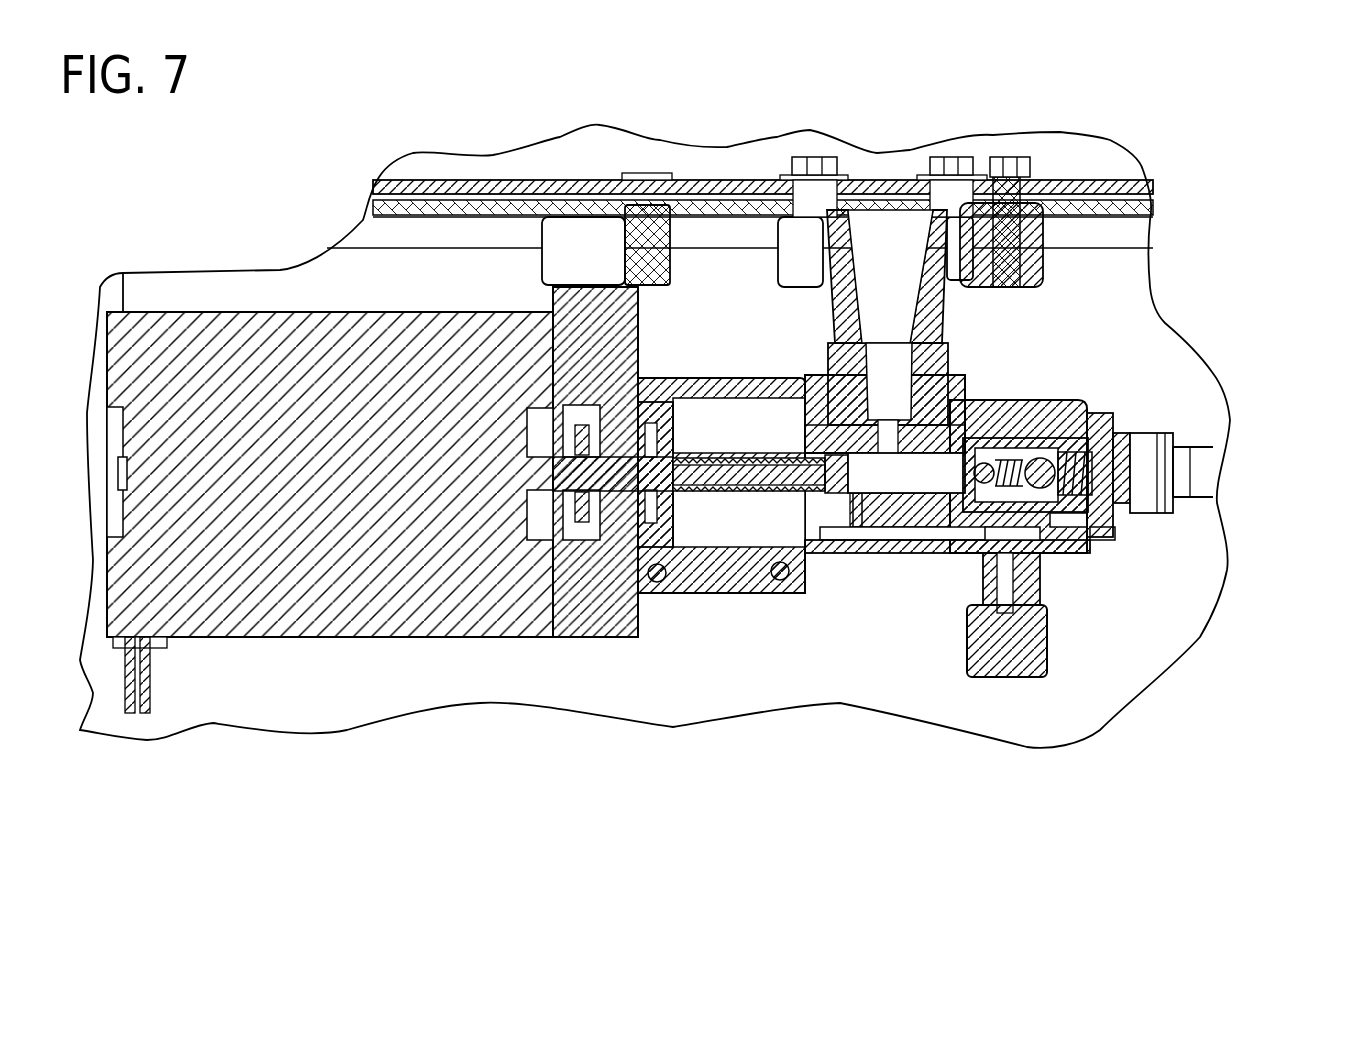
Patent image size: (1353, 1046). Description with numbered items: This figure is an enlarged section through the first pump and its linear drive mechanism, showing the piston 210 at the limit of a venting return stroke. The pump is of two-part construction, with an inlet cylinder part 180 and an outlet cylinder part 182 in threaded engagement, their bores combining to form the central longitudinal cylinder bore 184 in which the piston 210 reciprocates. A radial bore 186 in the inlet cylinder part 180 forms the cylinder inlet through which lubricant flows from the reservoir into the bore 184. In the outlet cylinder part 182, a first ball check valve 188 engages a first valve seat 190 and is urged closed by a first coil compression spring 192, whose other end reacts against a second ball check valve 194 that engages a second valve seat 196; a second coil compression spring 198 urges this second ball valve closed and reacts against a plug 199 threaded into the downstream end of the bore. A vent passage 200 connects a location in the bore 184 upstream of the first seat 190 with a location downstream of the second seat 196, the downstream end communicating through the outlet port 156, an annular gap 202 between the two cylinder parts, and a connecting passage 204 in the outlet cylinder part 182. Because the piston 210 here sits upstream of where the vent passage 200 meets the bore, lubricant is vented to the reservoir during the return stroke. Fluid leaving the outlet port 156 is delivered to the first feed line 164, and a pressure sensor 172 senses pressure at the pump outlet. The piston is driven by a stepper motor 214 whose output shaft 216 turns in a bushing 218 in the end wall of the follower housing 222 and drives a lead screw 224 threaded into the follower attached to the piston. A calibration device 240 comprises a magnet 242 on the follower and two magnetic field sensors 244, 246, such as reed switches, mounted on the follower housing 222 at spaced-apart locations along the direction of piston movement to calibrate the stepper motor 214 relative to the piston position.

The outlet port 156 is at (992, 585).
The first feed line 164 is at (1205, 482).
The pressure sensor 172 is at (1047, 650).
The inlet cylinder part 180 is at (950, 400).
The outlet cylinder part 182 is at (1113, 530).
The longitudinal cylinder bore 184 is at (900, 483).
The radial bore 186 is at (877, 378).
The first ball check valve 188 is at (990, 463).
The first valve seat 190 is at (968, 440).
The first coil compression spring 192 is at (1032, 455).
The second ball check valve 194 is at (1093, 418).
The second valve seat 196 is at (1075, 447).
The second coil compression spring 198 is at (1150, 450).
The plug 199 is at (1110, 480).
The vent passage 200 is at (925, 553).
The annular gap 202 is at (1010, 530).
The connecting passage 204 is at (1060, 515).
The piston 210 is at (767, 458).
The stepper motor 214 is at (297, 637).
The output shaft 216 is at (560, 497).
The bushing 218 is at (556, 430).
The follower housing 222 is at (693, 377).
The lead screw 224 is at (733, 558).
The calibration device 240 is at (676, 604).
The magnet 242 is at (722, 548).
The magnetic field sensor 244 is at (655, 585).
The magnetic field sensor 246 is at (772, 590).